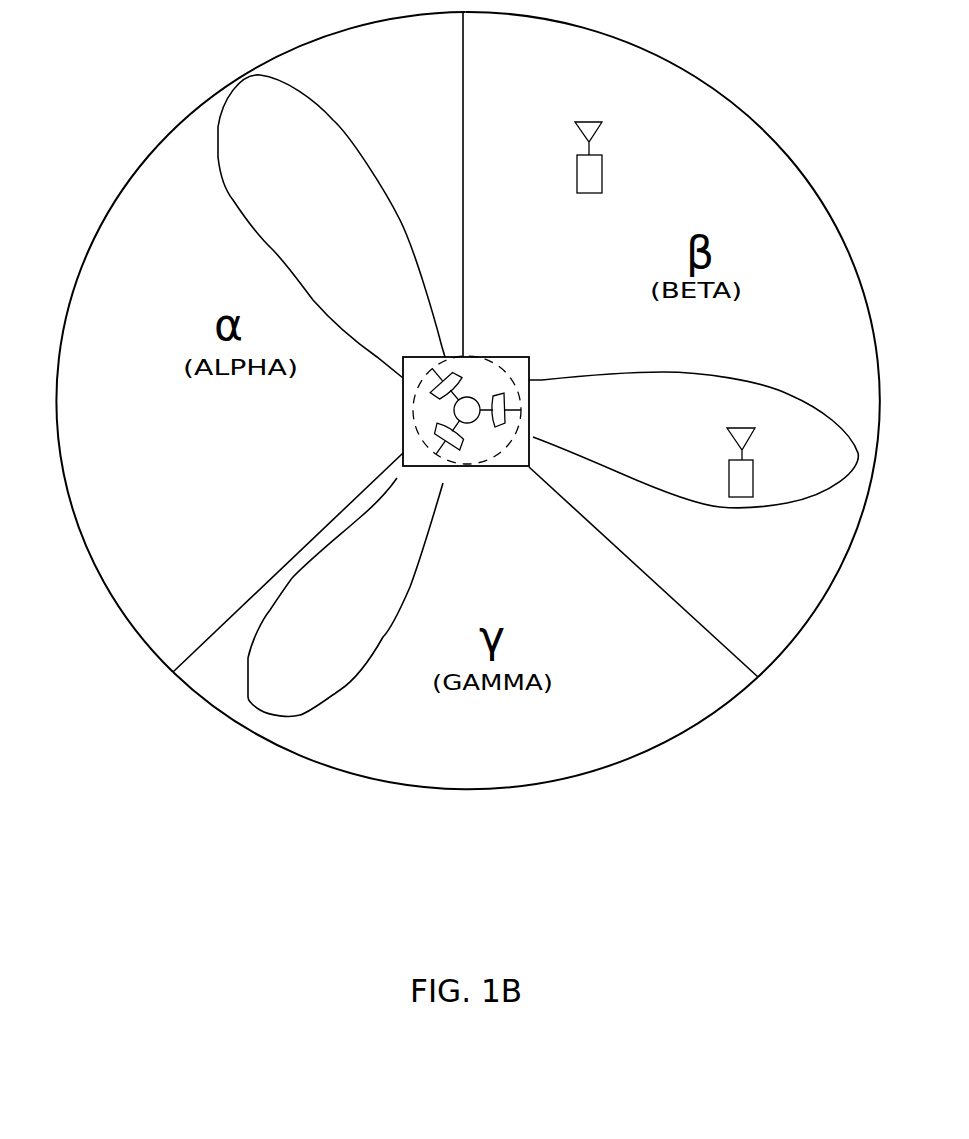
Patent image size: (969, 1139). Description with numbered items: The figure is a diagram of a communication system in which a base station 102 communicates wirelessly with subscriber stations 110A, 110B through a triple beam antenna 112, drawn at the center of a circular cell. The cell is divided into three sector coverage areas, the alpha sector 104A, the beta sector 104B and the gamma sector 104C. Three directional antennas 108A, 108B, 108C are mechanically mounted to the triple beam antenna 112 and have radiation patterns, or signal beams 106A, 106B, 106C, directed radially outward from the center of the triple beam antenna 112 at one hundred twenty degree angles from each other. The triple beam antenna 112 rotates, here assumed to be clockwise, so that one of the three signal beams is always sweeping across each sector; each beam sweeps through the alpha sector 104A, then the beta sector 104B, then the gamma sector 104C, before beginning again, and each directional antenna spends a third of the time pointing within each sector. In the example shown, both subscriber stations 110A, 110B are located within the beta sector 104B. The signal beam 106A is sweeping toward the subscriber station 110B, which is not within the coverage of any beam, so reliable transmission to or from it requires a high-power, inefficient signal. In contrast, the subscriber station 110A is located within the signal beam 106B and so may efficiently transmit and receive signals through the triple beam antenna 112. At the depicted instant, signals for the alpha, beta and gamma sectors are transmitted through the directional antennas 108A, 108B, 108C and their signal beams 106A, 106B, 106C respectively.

The base station 102 is at (487, 357).
The alpha sector 104A is at (263, 62).
The beta sector 104B is at (655, 55).
The gamma sector 104C is at (460, 792).
The signal beam 106A is at (337, 125).
The signal beam 106B is at (737, 380).
The signal beam 106C is at (303, 717).
The directional antenna 108A is at (430, 388).
The directional antenna 108B is at (513, 390).
The directional antenna 108C is at (465, 452).
The subscriber station 110A is at (738, 460).
The subscriber station 110B is at (595, 157).
The triple beam antenna 112 is at (420, 357).